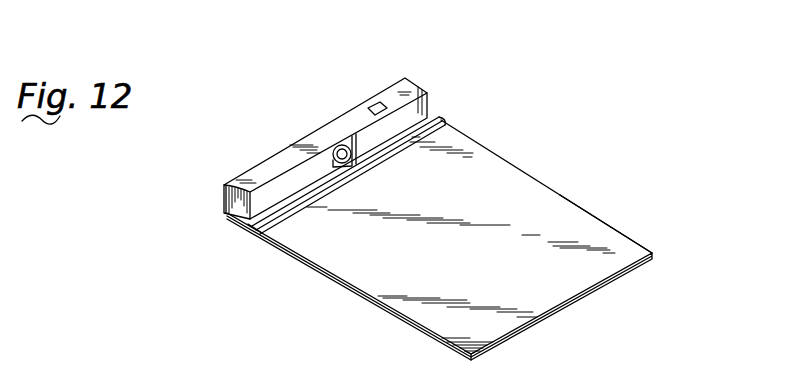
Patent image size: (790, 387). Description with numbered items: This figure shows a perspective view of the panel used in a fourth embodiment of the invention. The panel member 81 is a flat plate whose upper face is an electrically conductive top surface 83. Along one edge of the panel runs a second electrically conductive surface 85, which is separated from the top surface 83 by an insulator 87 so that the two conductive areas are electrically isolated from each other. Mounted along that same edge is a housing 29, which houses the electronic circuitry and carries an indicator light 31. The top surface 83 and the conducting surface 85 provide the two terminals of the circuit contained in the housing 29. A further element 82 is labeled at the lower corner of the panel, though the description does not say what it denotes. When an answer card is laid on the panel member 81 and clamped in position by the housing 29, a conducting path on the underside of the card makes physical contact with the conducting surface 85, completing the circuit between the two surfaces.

The housing member 29 is at (426, 97).
The indicator light 31 is at (341, 146).
The panel member 81 is at (318, 277).
The plate corner 82 is at (385, 369).
The electrically conductive top surface 83 is at (589, 220).
The electrically conductive surface 85 is at (440, 121).
The insulator 87 is at (256, 230).